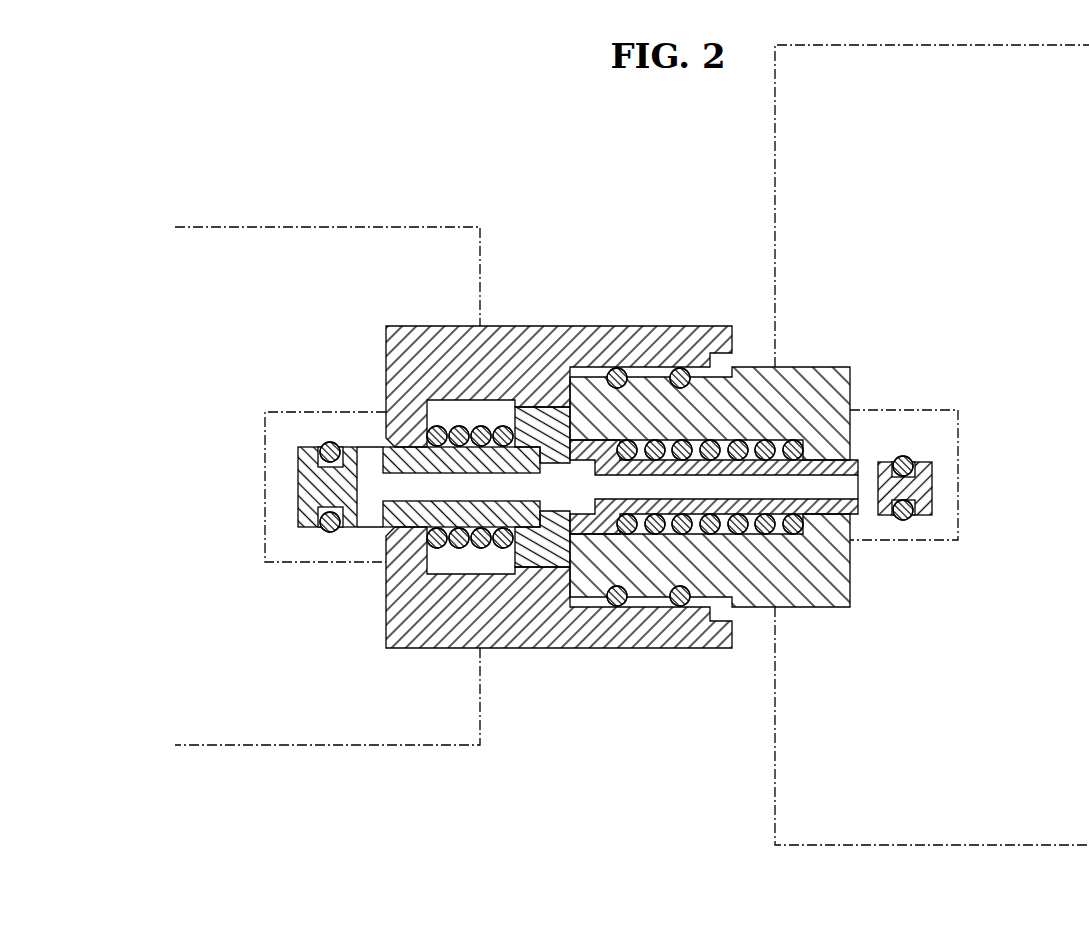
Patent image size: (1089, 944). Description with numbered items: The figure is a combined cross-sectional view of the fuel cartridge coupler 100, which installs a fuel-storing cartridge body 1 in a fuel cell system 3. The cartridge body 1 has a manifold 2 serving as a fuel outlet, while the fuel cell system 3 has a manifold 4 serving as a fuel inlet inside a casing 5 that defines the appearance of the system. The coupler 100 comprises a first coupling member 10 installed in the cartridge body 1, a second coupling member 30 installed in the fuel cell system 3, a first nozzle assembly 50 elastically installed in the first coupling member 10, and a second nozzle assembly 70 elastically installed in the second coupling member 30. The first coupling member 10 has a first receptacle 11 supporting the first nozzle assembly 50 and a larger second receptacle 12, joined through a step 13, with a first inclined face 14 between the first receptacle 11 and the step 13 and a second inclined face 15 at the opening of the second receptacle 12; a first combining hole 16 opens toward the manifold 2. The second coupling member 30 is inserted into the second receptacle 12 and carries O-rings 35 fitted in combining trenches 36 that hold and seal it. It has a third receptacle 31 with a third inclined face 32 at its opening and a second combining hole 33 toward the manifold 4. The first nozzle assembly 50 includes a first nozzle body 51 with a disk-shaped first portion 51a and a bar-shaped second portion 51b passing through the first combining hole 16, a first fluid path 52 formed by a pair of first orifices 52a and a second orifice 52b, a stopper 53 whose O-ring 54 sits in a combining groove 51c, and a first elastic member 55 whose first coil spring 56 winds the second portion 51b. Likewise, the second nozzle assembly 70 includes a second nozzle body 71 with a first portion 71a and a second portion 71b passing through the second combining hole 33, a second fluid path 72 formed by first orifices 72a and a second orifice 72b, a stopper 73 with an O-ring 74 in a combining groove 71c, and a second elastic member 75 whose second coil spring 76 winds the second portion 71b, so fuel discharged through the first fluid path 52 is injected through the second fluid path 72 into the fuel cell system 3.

The cartridge body 1 is at (310, 225).
The manifold 2 is at (263, 458).
The fuel cell system 3 is at (772, 133).
The manifold 4 is at (958, 440).
The casing 5 is at (772, 770).
The first coupling member 10 is at (410, 325).
The first receptacle 11 is at (455, 571).
The second receptacle 12 is at (655, 600).
The step 13 is at (578, 430).
The first inclined face 14 is at (553, 410).
The second inclined face 15 is at (742, 368).
The first combining hole 16 is at (387, 457).
The second coupling member 30 is at (840, 608).
The third receptacle 31 is at (745, 400).
The third inclined face 32 is at (597, 430).
The second combining hole 33 is at (858, 540).
The O-ring 35 is at (688, 368).
The combining trench 36 is at (690, 610).
The first nozzle assembly 50 is at (463, 409).
The first nozzle body 51 is at (548, 800).
The first portion 51a is at (514, 600).
The second portion 51b is at (492, 600).
The combining groove 51c is at (316, 505).
The first fluid path 52 is at (380, 490).
The first orifices 52a is at (380, 447).
The second orifice 52b is at (525, 430).
The stopper 53 is at (318, 530).
The O-ring 54 is at (316, 447).
The first elastic member 55 is at (444, 420).
The first coil spring 56 is at (427, 548).
The second nozzle assembly 70 is at (788, 538).
The second nozzle body 71 is at (612, 703).
The first portion 71a is at (548, 568).
The second portion 71b is at (575, 545).
The combining groove 71c is at (934, 498).
The second fluid path 72 is at (822, 492).
The first orifices 72a is at (860, 465).
The second orifice 72b is at (605, 440).
The stopper 73 is at (915, 522).
The O-ring 74 is at (914, 458).
The second elastic member 75 is at (785, 440).
The second coil spring 76 is at (808, 425).
The fuel cartridge coupler 100 is at (604, 165).